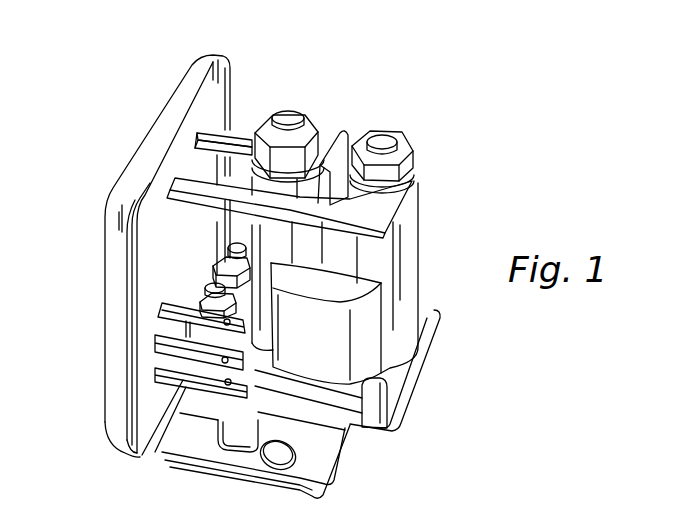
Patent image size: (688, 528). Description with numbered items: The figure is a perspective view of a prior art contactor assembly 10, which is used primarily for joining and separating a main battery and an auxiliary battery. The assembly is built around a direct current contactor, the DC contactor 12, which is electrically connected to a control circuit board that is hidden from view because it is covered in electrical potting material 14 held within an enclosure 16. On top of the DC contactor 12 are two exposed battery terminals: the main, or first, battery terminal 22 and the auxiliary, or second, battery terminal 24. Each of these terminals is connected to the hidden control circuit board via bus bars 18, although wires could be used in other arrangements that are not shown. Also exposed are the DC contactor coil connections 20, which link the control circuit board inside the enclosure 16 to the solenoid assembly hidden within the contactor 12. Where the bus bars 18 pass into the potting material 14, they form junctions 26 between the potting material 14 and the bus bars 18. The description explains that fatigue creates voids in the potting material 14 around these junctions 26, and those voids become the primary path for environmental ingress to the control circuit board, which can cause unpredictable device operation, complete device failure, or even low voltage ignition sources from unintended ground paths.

The contactor assembly 10 is at (411, 102).
The DC contactor 12 is at (413, 230).
The potting material 14 is at (155, 250).
The enclosure 16 is at (168, 128).
The bus bars 18 is at (202, 192).
The DC contactor coil connections 20 is at (210, 257).
The first battery terminal 22 is at (382, 134).
The second battery terminal 24 is at (288, 112).
The junctions 26 is at (171, 177).